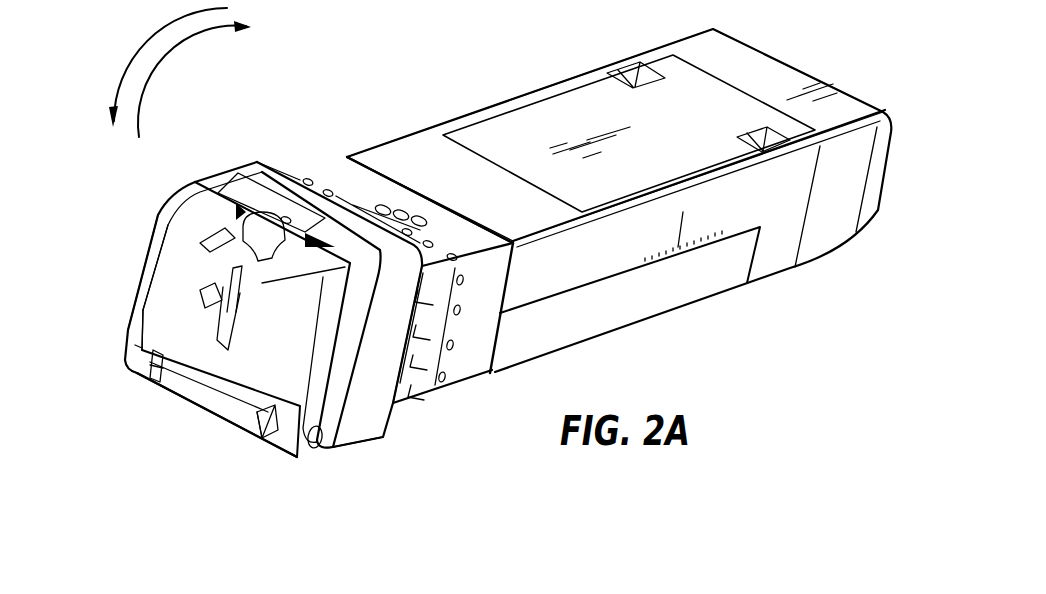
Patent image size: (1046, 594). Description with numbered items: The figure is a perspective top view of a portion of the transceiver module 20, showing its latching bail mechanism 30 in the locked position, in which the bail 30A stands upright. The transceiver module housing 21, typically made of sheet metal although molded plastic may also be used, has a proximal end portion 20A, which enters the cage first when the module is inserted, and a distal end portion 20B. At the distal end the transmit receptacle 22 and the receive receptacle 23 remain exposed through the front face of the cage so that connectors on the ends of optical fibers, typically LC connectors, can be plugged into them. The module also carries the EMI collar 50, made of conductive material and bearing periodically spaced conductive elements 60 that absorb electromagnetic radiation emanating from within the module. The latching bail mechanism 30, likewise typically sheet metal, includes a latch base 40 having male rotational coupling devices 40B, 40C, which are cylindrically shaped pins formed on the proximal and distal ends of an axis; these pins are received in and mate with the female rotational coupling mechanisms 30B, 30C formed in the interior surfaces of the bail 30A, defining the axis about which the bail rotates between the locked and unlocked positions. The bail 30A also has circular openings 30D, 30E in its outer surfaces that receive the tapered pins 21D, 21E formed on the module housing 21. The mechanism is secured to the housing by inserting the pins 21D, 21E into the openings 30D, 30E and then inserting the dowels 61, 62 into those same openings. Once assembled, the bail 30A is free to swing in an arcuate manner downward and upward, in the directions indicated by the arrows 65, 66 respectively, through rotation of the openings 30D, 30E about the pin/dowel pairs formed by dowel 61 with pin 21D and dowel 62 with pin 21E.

The transceiver module 20 is at (802, 42).
The proximal end portion 20A is at (765, 65).
The distal end portion 20B is at (233, 160).
The transceiver module housing 21 is at (548, 125).
The tapered pin 21D is at (132, 338).
The tapered pin 21E is at (297, 457).
The transmit receptacle 22 is at (196, 241).
The receive receptacle 23 is at (283, 281).
The latching bail mechanism 30 is at (158, 186).
The bail 30A is at (347, 317).
The female rotational coupling mechanism 30B is at (146, 380).
The female rotational coupling mechanism 30C is at (255, 440).
The circular opening 30D is at (108, 348).
The circular opening 30E is at (340, 432).
The latch base 40 is at (210, 398).
The male rotational coupling device 40B is at (148, 362).
The male rotational coupling device 40C is at (257, 423).
The EMI collar 50 is at (383, 200).
The conductive elements 60 is at (427, 353).
The dowel 61 is at (127, 350).
The dowel 62 is at (317, 447).
The arrow 65 is at (155, 35).
The arrow 66 is at (202, 37).